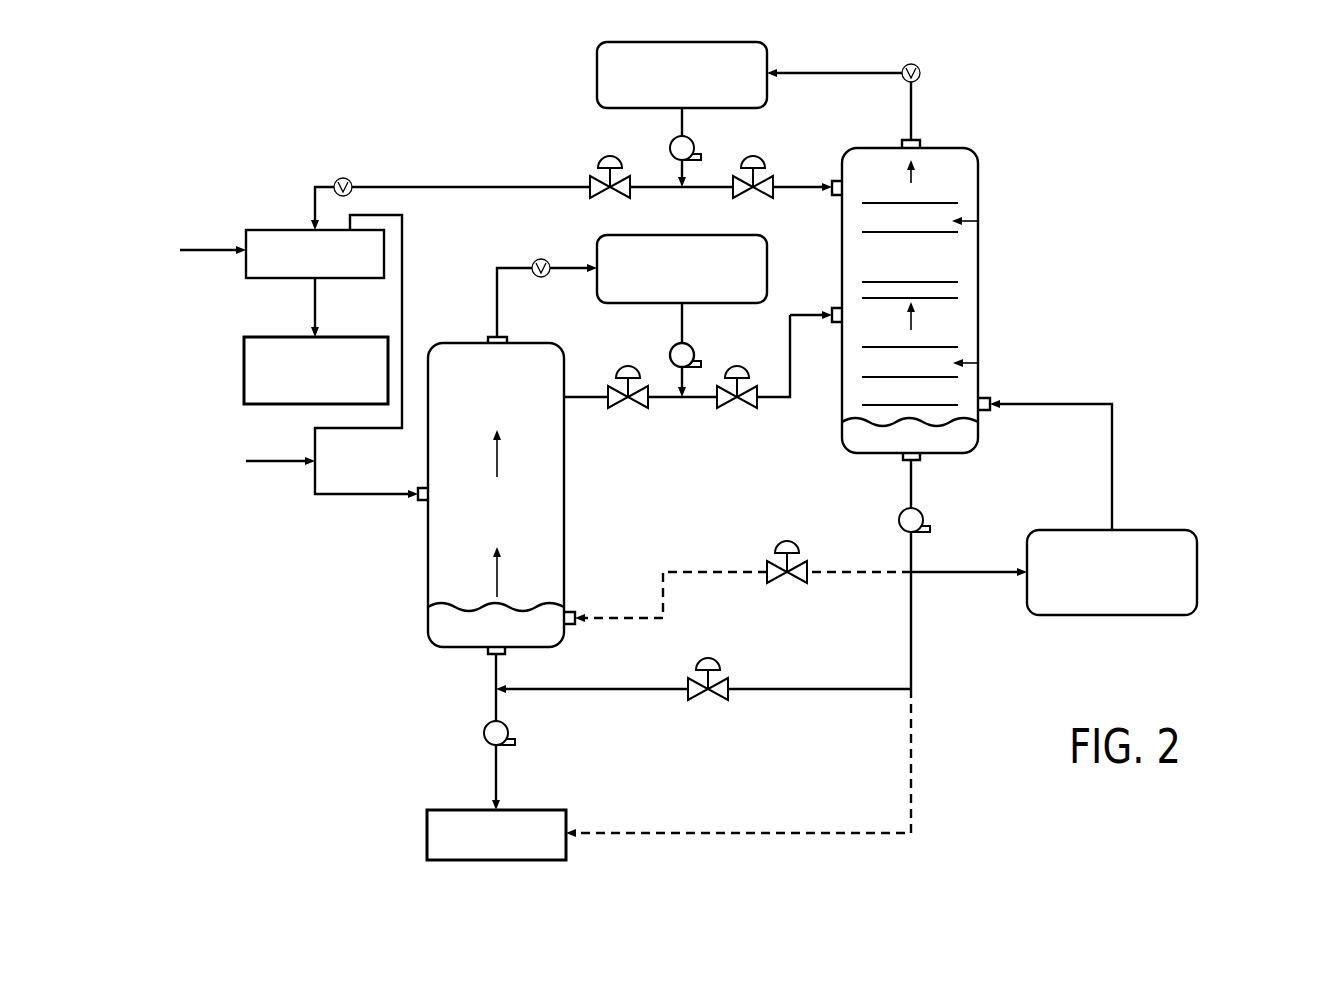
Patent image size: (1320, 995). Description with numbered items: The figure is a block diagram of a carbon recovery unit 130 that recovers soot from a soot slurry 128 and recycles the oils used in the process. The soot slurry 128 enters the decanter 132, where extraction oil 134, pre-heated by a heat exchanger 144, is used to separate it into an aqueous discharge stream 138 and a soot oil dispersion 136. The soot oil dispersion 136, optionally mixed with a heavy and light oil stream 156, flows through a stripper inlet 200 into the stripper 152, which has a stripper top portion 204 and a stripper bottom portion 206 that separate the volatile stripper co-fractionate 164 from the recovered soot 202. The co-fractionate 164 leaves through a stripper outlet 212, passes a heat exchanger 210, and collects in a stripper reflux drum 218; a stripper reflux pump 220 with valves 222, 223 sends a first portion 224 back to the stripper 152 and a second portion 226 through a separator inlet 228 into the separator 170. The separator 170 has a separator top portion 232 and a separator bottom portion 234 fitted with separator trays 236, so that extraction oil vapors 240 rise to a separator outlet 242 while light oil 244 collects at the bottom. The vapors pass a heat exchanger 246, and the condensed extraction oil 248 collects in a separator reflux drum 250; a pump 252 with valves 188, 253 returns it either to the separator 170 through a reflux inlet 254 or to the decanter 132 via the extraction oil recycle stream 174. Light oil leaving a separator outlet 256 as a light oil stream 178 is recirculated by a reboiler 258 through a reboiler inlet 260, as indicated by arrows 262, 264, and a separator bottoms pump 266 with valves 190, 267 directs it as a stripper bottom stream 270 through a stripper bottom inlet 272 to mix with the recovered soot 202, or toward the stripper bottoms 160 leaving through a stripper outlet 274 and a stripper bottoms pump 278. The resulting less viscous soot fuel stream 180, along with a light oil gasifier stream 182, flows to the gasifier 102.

The gasifier 102 is at (427, 833).
The soot slurry 128 is at (204, 250).
The carbon recovery unit 130 is at (216, 131).
The decanter 132 is at (278, 228).
The extraction oil 134 is at (388, 186).
The soot oil dispersion 136 is at (402, 293).
The aqueous discharge stream 138 is at (244, 368).
The heat exchanger 144 is at (340, 178).
The stripper 152 is at (428, 620).
The heavy and light oil stream 156 is at (272, 463).
The stripper bottoms 160 is at (494, 672).
The stripper co-fractionate 164 is at (497, 300).
The separator 170 is at (977, 161).
The extraction oil recycle stream 174 is at (643, 190).
The light oil stream 178 is at (908, 604).
The soot fuel stream 180 is at (498, 770).
The light oil gasifier stream 182 is at (912, 758).
The valve 188 is at (590, 185).
The valve 190 is at (709, 654).
The stripper inlet 200 is at (424, 502).
The recovered soot 202 is at (459, 627).
The stripper top portion 204 is at (458, 418).
The stripper bottom portion 206 is at (458, 542).
The heat exchanger 210 is at (538, 260).
The stripper outlet 212 is at (507, 337).
The stripper reflux drum 218 is at (601, 236).
The stripper reflux pump 220 is at (670, 352).
The valve 222 is at (624, 408).
The valve 223 is at (742, 408).
The first portion of stripper co-fractionate 224 is at (667, 400).
The second portion of stripper co-fractionate 226 is at (790, 358).
The separator inlet 228 is at (831, 311).
The separator top portion 232 is at (978, 221).
The separator bottom portion 234 is at (978, 363).
The separator trays 236 is at (882, 232).
The extraction oil vapors 240 is at (913, 110).
The separator outlet 242 is at (920, 142).
The light oil 244 is at (960, 438).
The heat exchanger 246 is at (919, 67).
The condensed extraction oil 248 is at (818, 72).
The separator reflux drum 250 is at (597, 82).
The separator reflux pump 252 is at (694, 139).
The valve 253 is at (757, 157).
The reflux inlet 254 is at (835, 181).
The separator outlet 256 is at (903, 462).
The reboiler 258 is at (1197, 575).
The reboiler inlet 260 is at (982, 410).
The arrow 262 is at (962, 573).
The arrow 264 is at (1113, 466).
The separator bottoms pump 266 is at (920, 512).
The valve 267 is at (786, 541).
The stripper bottom stream 270 is at (663, 590).
The stripper bottom inlet 272 is at (570, 611).
The stripper outlet 274 is at (505, 656).
The stripper bottoms pump 278 is at (486, 741).